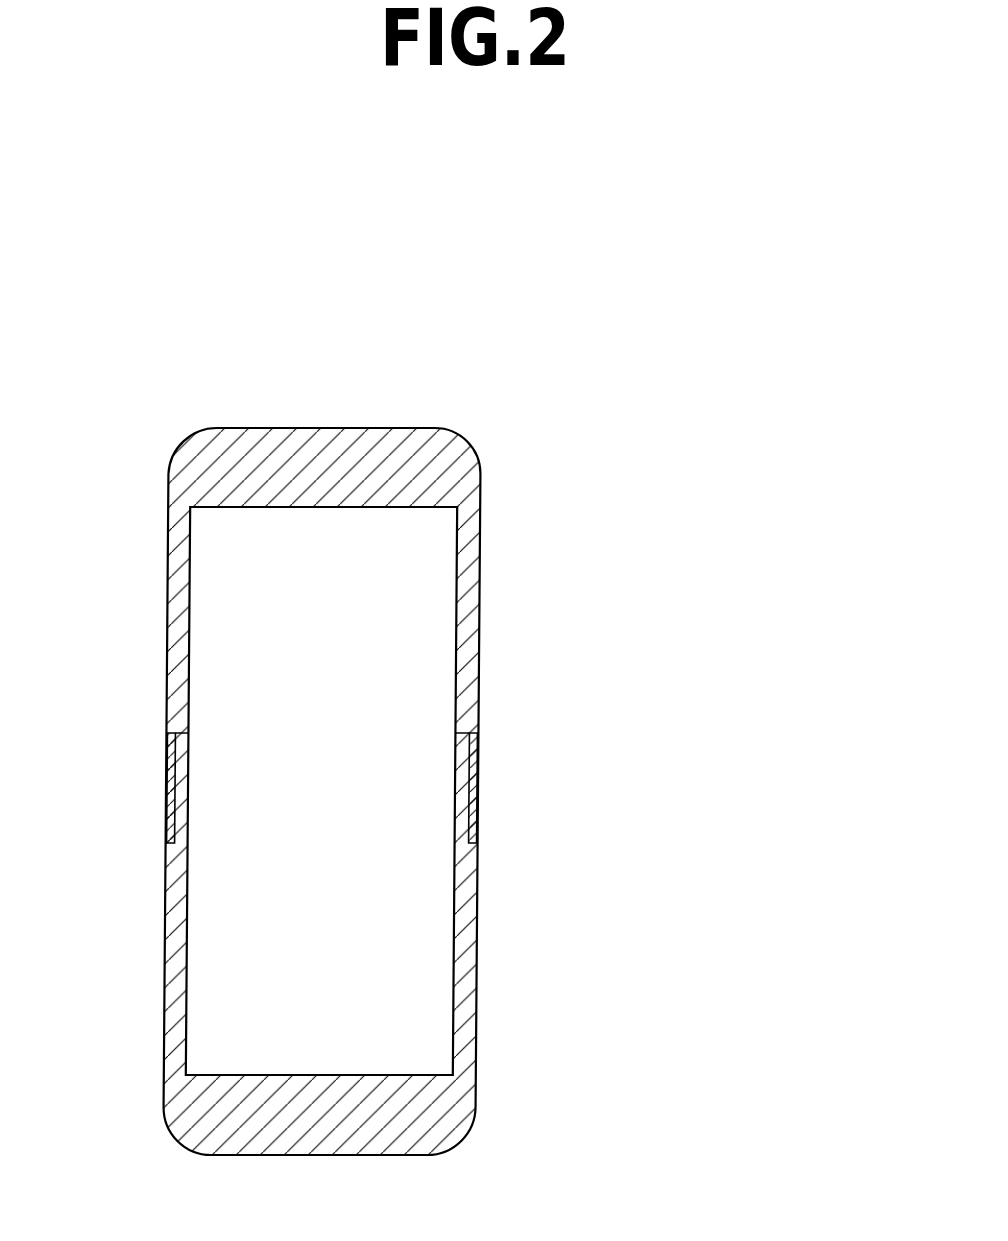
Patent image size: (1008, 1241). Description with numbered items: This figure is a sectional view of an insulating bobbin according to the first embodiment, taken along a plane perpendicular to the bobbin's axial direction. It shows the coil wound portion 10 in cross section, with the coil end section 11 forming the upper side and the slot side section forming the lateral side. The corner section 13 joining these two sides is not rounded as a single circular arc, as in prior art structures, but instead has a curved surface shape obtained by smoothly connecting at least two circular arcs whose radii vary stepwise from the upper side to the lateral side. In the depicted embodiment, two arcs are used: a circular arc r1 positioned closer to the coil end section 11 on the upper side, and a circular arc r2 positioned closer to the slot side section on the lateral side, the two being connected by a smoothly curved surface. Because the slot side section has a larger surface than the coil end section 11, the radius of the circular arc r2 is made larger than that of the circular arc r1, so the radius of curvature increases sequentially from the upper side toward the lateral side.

The coil wound portion 10 is at (540, 785).
The coil end section 11 is at (425, 413).
The corner section 13 is at (475, 442).
The circular arc r1 is at (190, 427).
The circular arc r2 is at (162, 487).